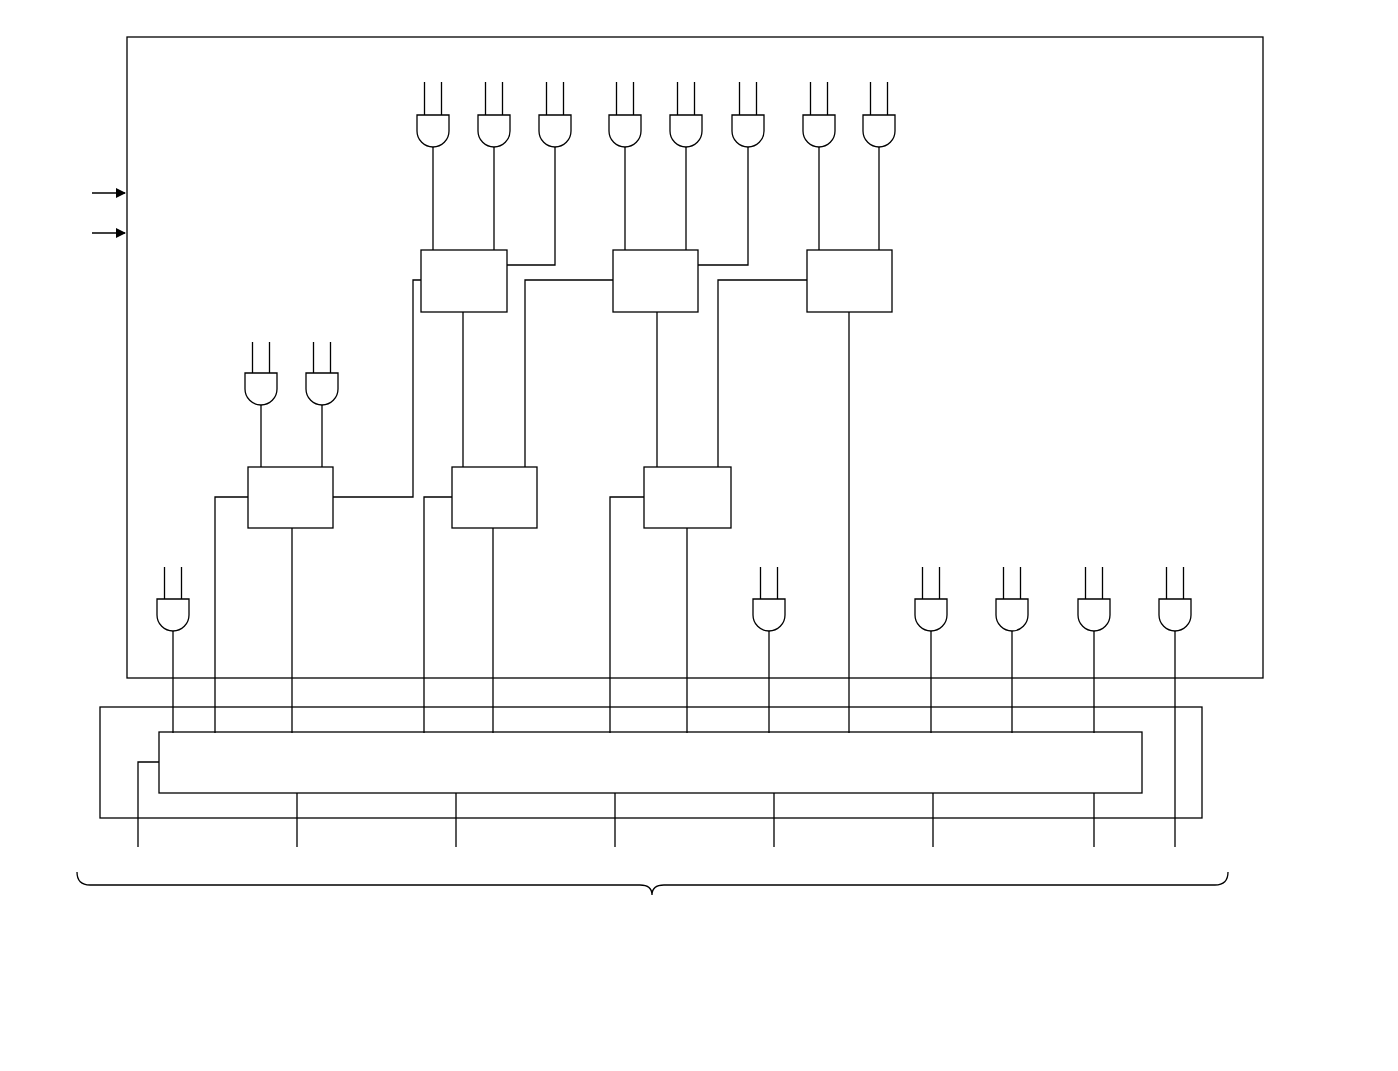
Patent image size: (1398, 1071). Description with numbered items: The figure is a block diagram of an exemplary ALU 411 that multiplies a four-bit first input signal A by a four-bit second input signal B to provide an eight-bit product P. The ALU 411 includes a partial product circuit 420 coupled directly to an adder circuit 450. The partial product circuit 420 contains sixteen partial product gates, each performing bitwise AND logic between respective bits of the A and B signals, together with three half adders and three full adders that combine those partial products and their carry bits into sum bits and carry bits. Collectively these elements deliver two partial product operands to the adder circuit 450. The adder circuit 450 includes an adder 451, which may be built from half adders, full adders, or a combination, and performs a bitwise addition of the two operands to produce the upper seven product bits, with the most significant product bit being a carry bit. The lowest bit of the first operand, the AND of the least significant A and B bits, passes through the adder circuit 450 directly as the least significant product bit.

The ALU 411 is at (1306, 67).
The partial product circuit 420 is at (127, 62).
The adder circuit 450 is at (121, 707).
The adder 451 is at (159, 744).